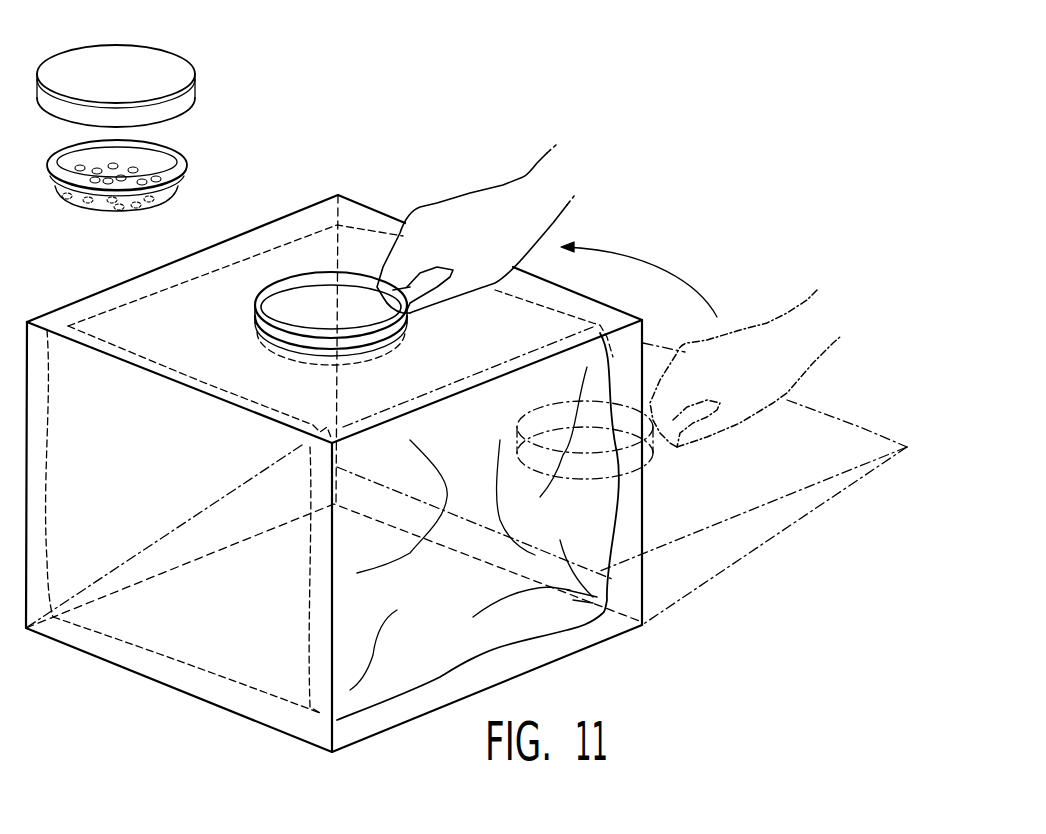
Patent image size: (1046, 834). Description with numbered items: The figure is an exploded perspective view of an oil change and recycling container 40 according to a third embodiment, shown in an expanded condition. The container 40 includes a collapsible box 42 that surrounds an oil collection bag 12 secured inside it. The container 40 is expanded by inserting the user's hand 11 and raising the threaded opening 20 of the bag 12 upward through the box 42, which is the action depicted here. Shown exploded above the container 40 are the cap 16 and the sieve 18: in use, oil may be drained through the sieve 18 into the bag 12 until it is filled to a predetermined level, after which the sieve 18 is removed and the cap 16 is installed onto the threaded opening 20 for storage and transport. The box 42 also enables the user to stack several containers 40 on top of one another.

The user's hand 11 is at (490, 193).
The oil collection bag 12 is at (552, 617).
The cap 16 is at (183, 73).
The sieve 18 is at (180, 163).
The threaded opening 20 is at (287, 293).
The oil change and recycling container 40 is at (407, 123).
The collapsible box 42 is at (362, 203).